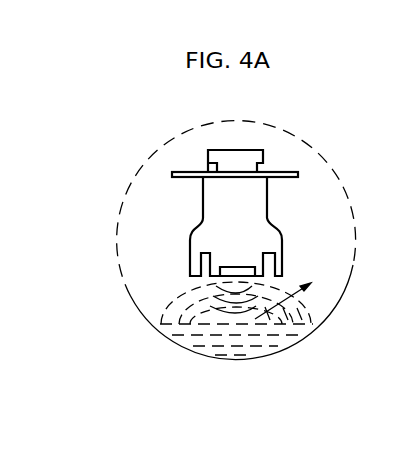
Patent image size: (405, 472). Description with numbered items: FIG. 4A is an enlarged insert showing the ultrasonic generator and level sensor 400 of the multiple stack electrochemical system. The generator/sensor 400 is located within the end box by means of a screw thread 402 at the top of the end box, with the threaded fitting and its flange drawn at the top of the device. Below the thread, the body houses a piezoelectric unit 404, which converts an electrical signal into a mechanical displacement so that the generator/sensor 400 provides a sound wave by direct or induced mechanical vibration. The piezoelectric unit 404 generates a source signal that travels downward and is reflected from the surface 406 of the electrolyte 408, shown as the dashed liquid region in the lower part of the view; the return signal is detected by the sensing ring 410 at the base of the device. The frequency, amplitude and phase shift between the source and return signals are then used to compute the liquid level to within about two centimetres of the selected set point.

The ultrasonic generator and level sensor 400 is at (185, 354).
The screw thread 402 is at (253, 165).
The piezoelectric unit 404 is at (243, 267).
The surface 406 is at (288, 309).
The electrolyte 408 is at (256, 348).
The sensing ring 410 is at (282, 263).